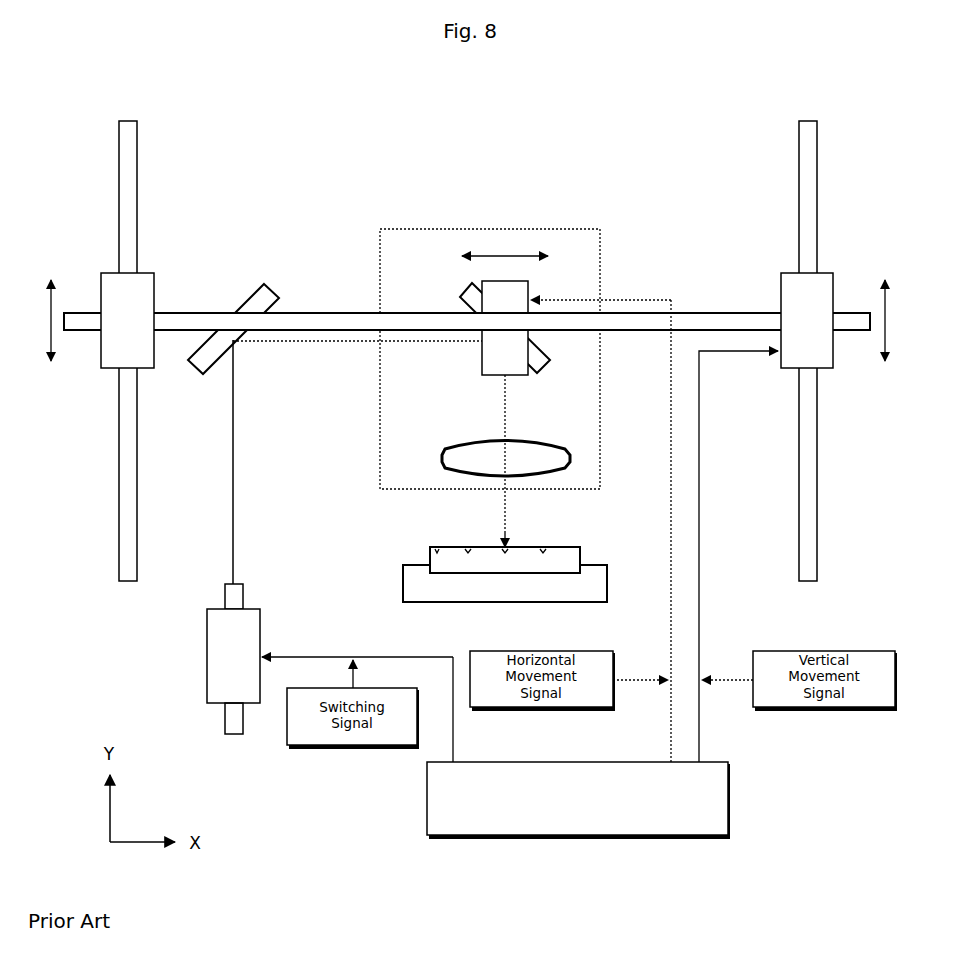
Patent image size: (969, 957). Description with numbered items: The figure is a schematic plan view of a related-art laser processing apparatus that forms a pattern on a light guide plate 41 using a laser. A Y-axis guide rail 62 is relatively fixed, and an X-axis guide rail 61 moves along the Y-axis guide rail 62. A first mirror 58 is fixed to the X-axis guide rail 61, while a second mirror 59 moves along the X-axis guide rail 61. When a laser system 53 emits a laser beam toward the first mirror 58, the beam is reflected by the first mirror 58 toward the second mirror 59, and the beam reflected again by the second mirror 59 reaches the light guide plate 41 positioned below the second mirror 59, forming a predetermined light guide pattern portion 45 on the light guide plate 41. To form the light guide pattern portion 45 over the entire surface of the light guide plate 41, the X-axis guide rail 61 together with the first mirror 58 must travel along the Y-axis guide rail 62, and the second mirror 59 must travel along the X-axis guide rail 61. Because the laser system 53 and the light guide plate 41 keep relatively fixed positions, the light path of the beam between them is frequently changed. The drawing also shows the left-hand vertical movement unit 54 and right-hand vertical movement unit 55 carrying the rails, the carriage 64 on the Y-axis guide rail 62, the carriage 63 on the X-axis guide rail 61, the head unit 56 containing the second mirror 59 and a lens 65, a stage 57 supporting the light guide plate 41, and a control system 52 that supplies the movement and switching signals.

The first vertical movement unit 54 is at (184, 335).
The second vertical movement unit 55 is at (799, 344).
The laser head unit 56 is at (490, 322).
The first mirror 58 is at (233, 305).
The second mirror 59 is at (478, 313).
The horizontal movement carriage 63 is at (532, 317).
The X-axis guide rail 61 is at (467, 293).
The Y-axis guide rail 62 is at (834, 351).
The vertical movement carriage 64 is at (834, 306).
The focusing lens 65 is at (480, 459).
The light guide pattern portion 45 is at (495, 523).
The light guide plate 41 is at (460, 551).
The stage 57 is at (464, 583).
The laser system 53 is at (205, 659).
The control system 52 is at (608, 799).